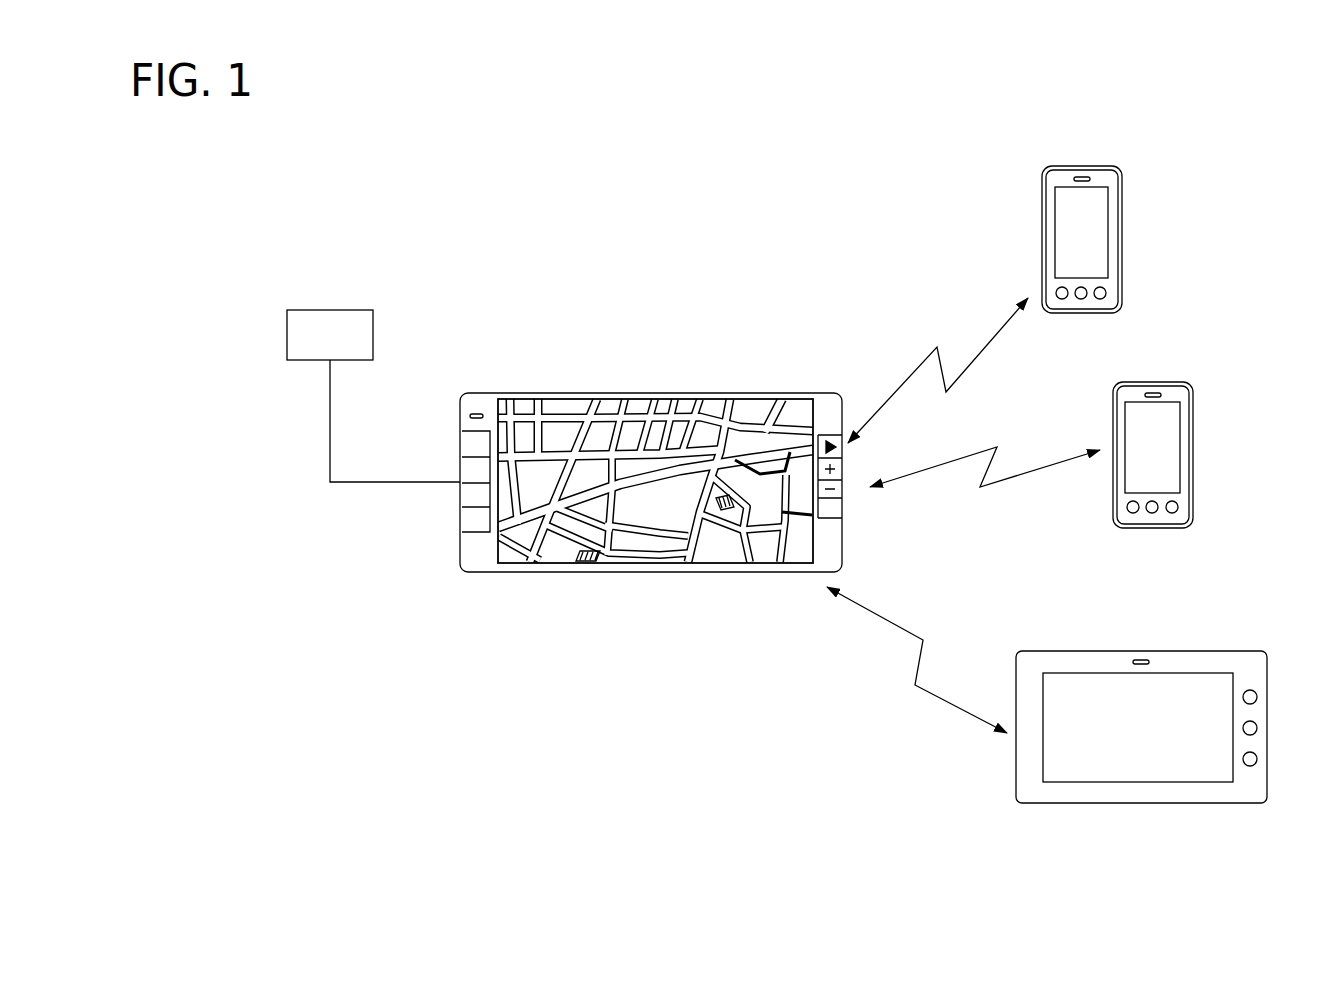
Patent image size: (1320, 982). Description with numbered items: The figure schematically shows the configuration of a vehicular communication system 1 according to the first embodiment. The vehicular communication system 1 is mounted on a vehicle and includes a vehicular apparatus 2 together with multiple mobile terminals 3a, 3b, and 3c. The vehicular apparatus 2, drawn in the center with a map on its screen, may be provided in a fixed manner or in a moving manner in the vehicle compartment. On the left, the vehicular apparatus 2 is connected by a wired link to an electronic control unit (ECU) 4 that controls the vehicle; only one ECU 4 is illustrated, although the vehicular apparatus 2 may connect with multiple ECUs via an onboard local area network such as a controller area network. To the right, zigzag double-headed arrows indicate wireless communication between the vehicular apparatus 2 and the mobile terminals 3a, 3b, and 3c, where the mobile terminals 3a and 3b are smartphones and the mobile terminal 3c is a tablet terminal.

The vehicular communication system 1 is at (651, 399).
The vehicular apparatus 2 is at (638, 392).
The mobile terminal 3a is at (1082, 165).
The mobile terminal 3b is at (1153, 380).
The mobile terminal 3c is at (1134, 650).
The electronic control unit (ECU) 4 is at (329, 310).